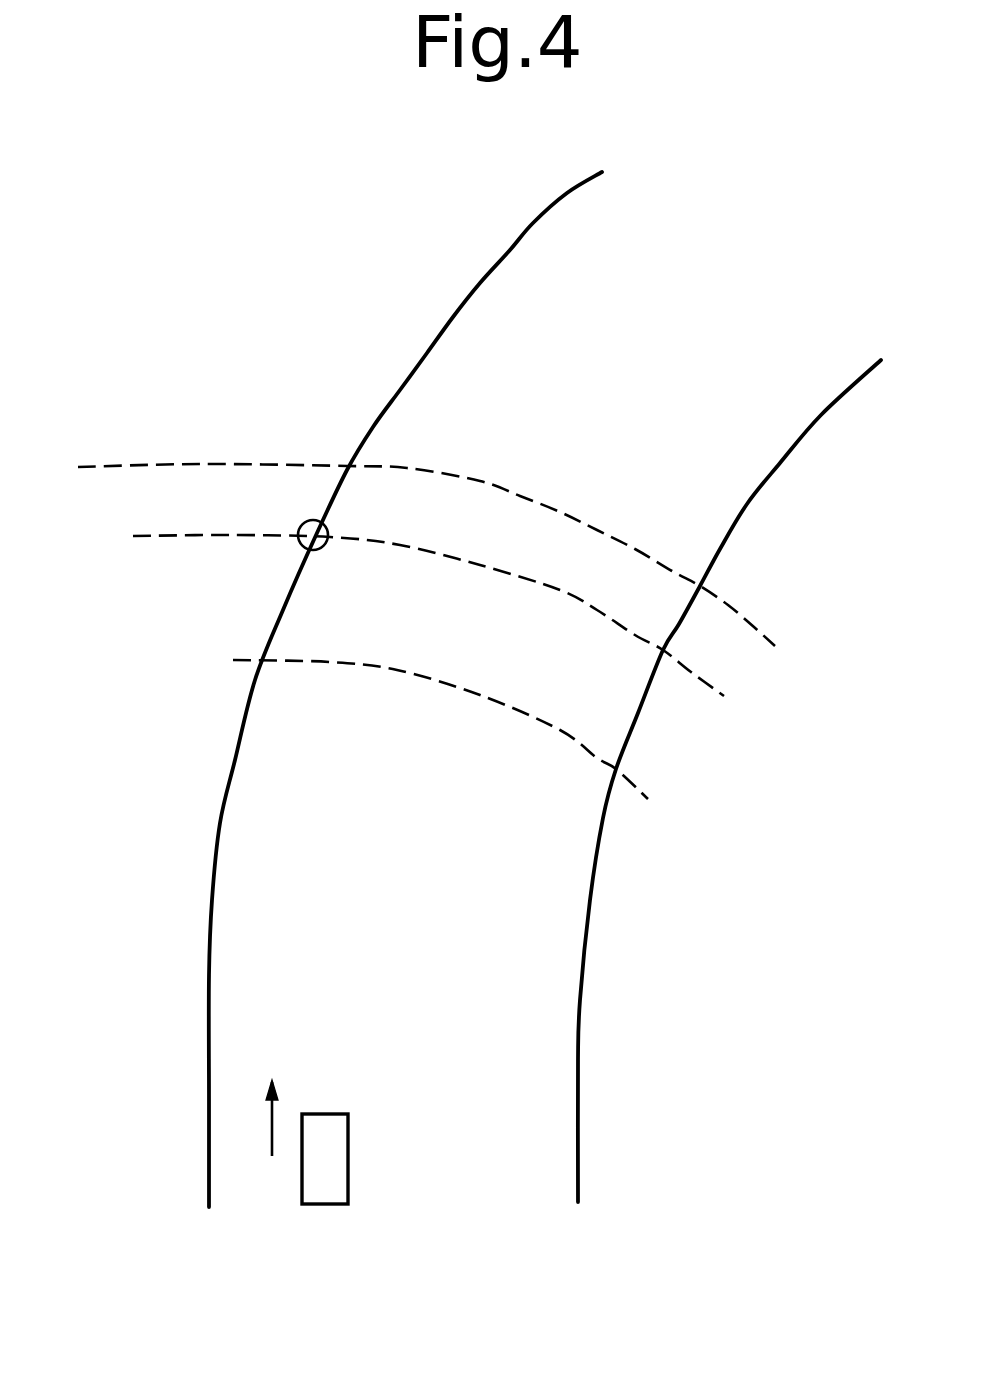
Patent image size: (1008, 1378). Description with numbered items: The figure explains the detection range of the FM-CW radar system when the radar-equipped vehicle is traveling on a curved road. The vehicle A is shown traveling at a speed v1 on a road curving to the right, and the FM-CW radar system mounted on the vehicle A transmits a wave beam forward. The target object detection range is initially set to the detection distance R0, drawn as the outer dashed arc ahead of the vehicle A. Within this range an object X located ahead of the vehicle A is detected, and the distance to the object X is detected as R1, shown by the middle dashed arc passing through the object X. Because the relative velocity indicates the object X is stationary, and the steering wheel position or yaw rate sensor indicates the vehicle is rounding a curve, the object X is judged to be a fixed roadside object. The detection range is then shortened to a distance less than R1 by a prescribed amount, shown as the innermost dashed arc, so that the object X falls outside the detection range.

The detection distance R0 is at (101, 1117).
The detected distance R1 is at (155, 538).
The object X is at (316, 550).
The speed v1 is at (261, 1096).
The vehicle A is at (330, 1204).